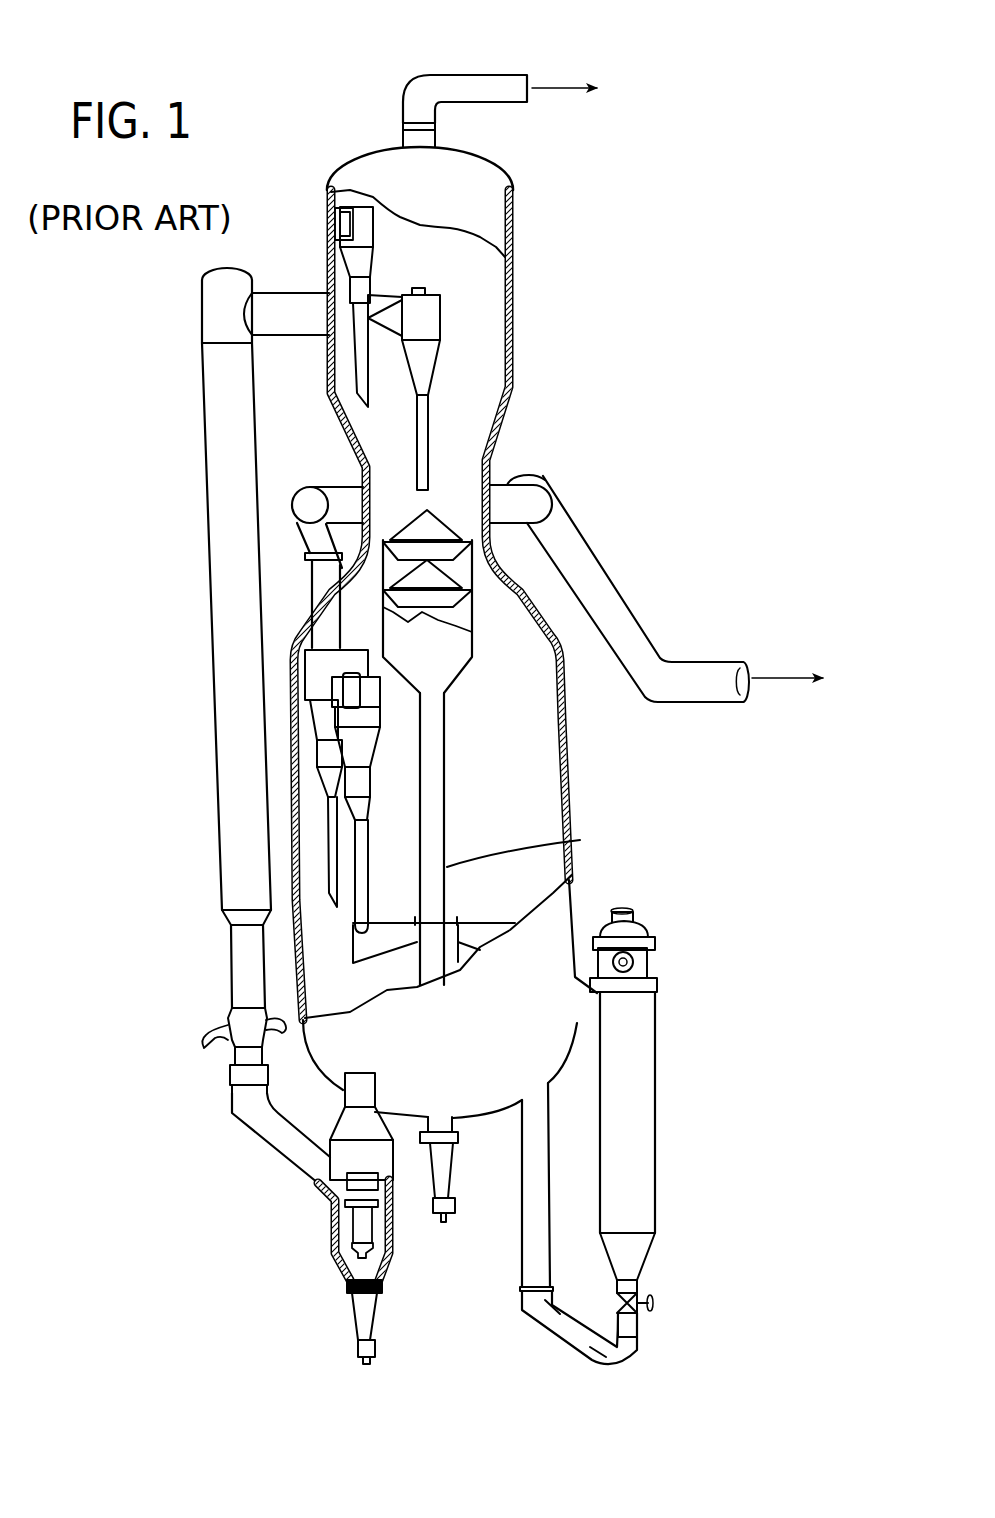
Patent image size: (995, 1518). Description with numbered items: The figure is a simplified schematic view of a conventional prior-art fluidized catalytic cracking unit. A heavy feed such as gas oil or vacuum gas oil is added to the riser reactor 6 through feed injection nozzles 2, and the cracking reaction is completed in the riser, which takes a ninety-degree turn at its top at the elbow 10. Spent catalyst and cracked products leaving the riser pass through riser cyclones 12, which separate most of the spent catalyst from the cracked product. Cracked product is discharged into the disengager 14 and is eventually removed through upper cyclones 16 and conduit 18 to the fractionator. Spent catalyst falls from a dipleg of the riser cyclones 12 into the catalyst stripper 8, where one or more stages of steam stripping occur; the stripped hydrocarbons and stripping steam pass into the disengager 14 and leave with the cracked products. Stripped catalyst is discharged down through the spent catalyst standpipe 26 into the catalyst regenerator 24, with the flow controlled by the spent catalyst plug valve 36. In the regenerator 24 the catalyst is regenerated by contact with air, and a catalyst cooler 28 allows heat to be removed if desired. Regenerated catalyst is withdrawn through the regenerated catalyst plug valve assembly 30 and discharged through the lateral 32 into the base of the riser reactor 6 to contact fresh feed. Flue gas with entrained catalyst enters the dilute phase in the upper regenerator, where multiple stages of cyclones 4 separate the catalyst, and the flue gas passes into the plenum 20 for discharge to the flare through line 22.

The feed injection nozzles 2 is at (212, 1035).
The cyclones 4 is at (315, 725).
The riser reactor 6 is at (222, 655).
The catalyst stripper 8 is at (333, 575).
The elbow 10 is at (202, 318).
The riser cyclones 12 is at (432, 333).
The disengager 14 is at (470, 270).
The upper cyclones 16 is at (340, 256).
The conduit 18 is at (489, 73).
The plenum 20 is at (535, 497).
The line 22 is at (808, 682).
The catalyst regenerator 24 is at (578, 770).
The spent catalyst standpipe 26 is at (452, 862).
The catalyst cooler 28 is at (657, 1072).
The regenerated catalyst plug valve assembly 30 is at (355, 1230).
The lateral 32 is at (255, 1145).
The spent catalyst plug valve 36 is at (460, 1130).